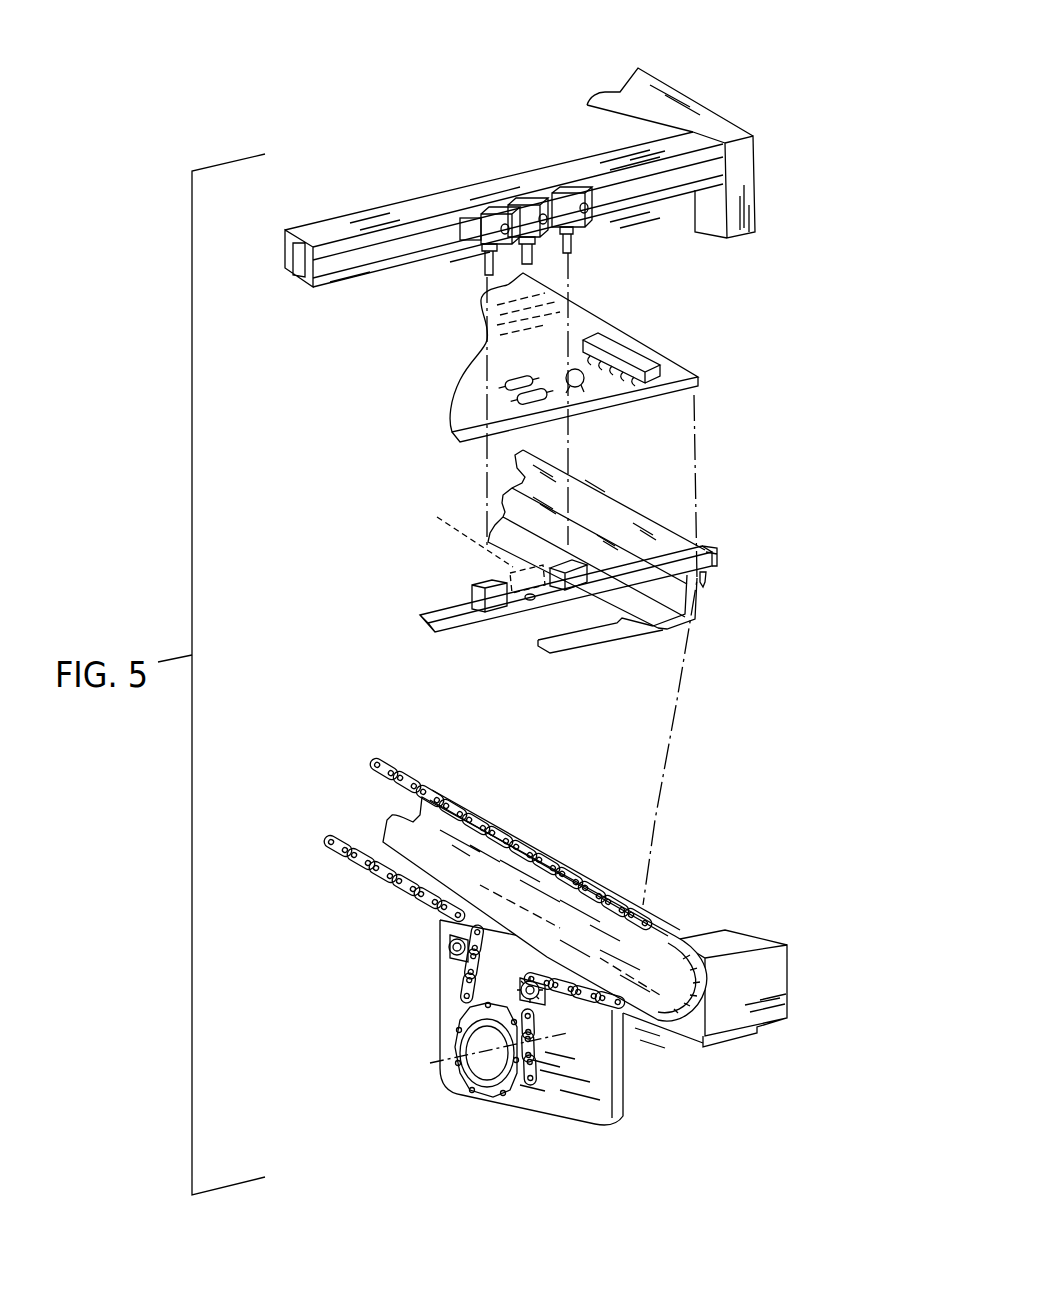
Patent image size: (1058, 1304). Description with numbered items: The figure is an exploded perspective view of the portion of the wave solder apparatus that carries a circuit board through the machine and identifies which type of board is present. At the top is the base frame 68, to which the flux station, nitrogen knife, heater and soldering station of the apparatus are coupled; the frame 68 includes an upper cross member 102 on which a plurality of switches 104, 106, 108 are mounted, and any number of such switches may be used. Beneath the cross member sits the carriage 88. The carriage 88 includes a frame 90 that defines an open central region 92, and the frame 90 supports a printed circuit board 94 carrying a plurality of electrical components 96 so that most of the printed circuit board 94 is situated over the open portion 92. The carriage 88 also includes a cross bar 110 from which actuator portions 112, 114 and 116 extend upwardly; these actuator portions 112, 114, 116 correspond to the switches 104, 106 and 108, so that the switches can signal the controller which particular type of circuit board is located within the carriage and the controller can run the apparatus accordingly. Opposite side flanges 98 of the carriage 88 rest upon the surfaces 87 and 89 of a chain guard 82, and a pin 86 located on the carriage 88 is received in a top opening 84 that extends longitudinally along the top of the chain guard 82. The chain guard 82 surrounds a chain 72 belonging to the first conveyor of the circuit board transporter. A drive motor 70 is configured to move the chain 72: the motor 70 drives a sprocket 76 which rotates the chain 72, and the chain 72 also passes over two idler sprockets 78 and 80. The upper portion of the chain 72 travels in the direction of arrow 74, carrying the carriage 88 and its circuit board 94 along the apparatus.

The base frame 68 is at (801, 166).
The upper cross member 102 is at (670, 143).
The switch 104 is at (483, 222).
The switch 106 is at (527, 207).
The switch 108 is at (567, 197).
The printed circuit board 94 is at (677, 375).
The electrical components 96 is at (623, 348).
The carriage 88 is at (741, 509).
The frame 90 is at (580, 628).
The open central region 92 is at (566, 642).
The cross bar 110 is at (437, 620).
The side flanges 98 is at (718, 567).
The pin 86 is at (707, 583).
The actuator portion 112 is at (475, 597).
The actuator portion 116 is at (573, 568).
The actuator portion 114 is at (467, 544).
The drive motor 70 is at (787, 995).
The arrow 74 is at (366, 699).
The sprocket 76 is at (482, 1068).
The idler sprocket 78 is at (455, 947).
The idler sprocket 80 is at (547, 1010).
The top opening 84 is at (693, 927).
The chain guard 82 is at (663, 1012).
The chain guard surface 89 is at (570, 868).
The chain guard surface 87 is at (533, 843).
The chain 72 is at (378, 867).